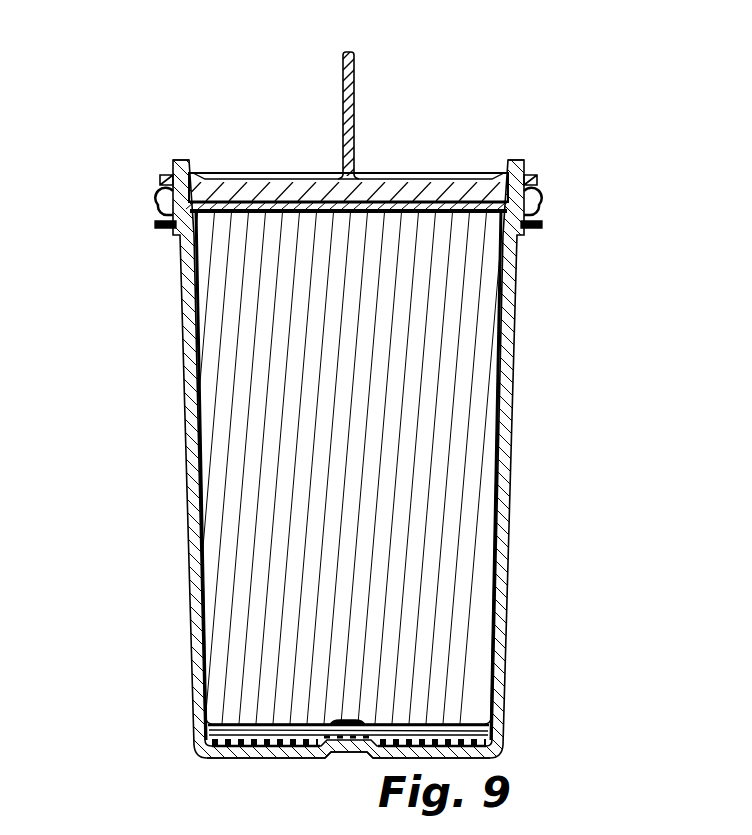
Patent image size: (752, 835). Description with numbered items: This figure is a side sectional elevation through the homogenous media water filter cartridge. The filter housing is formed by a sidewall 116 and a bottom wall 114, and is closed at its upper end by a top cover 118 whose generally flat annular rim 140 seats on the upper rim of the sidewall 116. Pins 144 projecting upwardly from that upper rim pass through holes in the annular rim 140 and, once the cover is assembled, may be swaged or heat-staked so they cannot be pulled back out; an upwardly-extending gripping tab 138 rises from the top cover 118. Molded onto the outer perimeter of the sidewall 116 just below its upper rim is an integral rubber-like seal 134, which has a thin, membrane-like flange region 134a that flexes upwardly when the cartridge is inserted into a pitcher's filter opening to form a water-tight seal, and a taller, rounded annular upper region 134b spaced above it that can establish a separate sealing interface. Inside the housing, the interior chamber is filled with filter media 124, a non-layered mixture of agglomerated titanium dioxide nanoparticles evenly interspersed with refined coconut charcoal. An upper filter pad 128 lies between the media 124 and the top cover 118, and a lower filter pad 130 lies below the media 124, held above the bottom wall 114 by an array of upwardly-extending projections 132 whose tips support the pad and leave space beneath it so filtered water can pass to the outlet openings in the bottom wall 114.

The bottom wall 114 is at (234, 760).
The filter housing sidewall 116 is at (184, 386).
The top cover 118 is at (232, 173).
The filter media 124 is at (270, 425).
The upper filter pad 128 is at (450, 218).
The lower filter pad 130 is at (455, 723).
The projections 132 is at (279, 749).
The seal 134 is at (160, 215).
The thin flange region 134a is at (152, 236).
The rounded annular upper region 134b is at (158, 180).
The gripping tab 138 is at (354, 78).
The annular rim 140 is at (152, 190).
The pins 144 is at (180, 161).